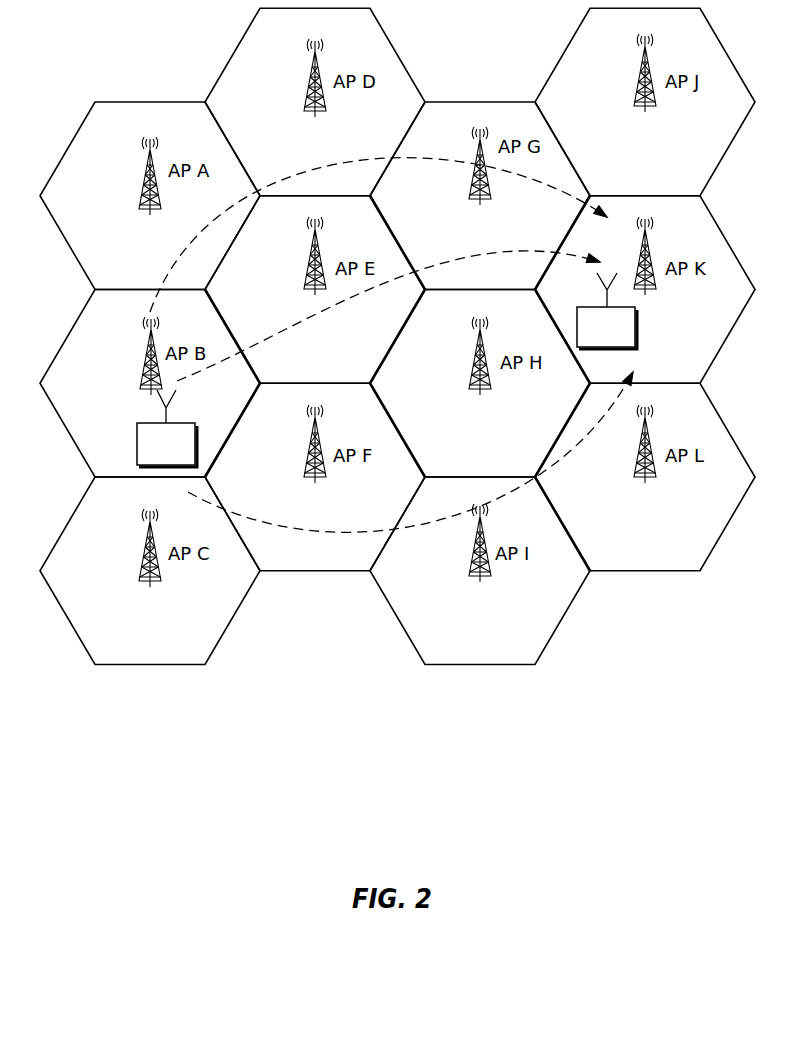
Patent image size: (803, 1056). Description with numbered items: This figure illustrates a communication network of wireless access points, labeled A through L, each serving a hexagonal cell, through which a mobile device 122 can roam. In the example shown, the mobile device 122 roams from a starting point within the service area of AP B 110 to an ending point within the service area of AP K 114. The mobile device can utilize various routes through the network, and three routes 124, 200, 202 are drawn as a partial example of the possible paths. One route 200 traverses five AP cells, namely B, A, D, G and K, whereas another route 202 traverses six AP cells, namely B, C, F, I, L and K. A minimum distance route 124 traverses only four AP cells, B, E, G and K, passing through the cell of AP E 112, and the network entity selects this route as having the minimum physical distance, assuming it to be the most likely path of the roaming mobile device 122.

The wireless access point AP B 110 is at (123, 343).
The wireless access point AP E 112 is at (300, 245).
The wireless access point AP K 114 is at (630, 244).
The mobile device 122 is at (140, 423).
The minimum distance route 124 is at (502, 253).
The route 200 is at (356, 163).
The route 202 is at (306, 528).